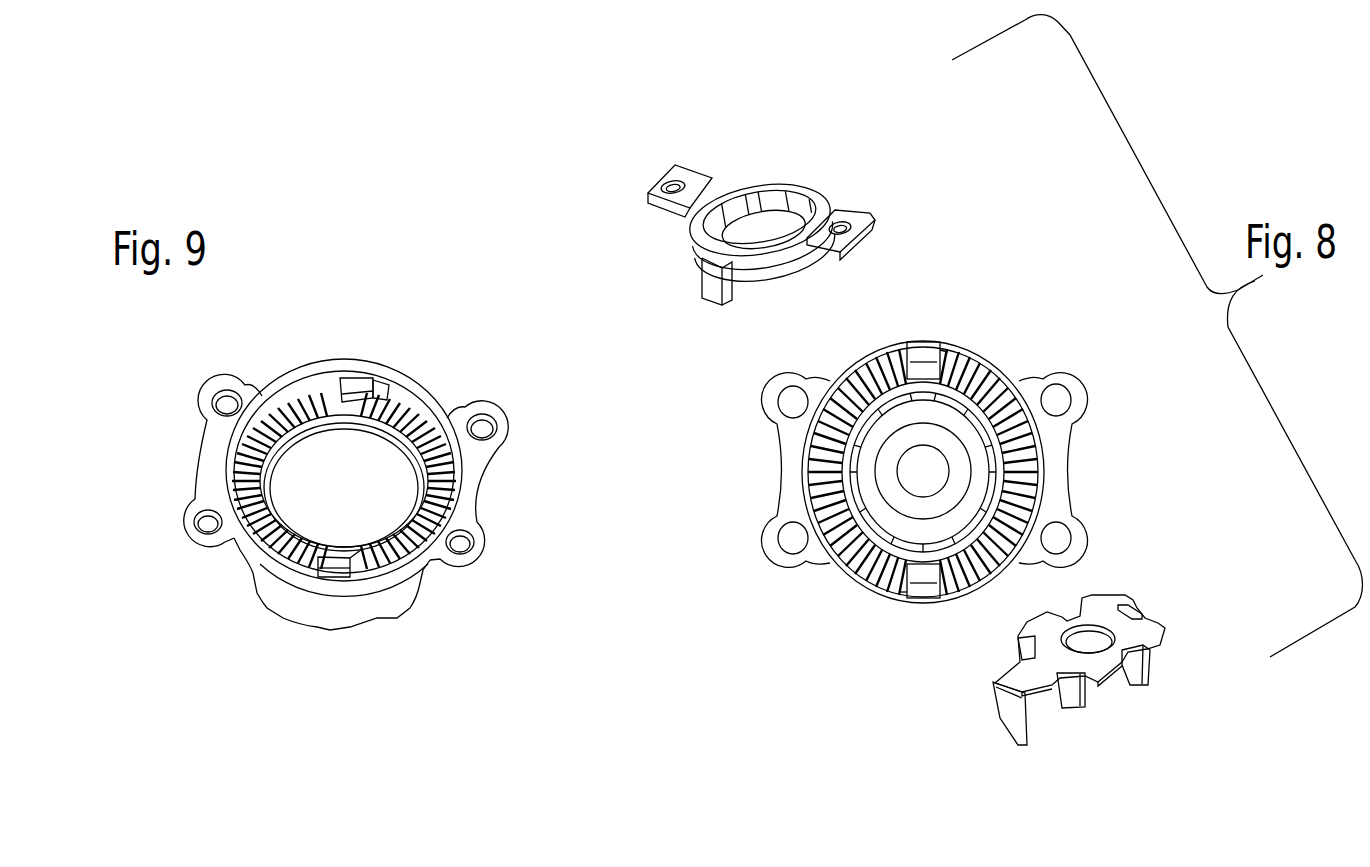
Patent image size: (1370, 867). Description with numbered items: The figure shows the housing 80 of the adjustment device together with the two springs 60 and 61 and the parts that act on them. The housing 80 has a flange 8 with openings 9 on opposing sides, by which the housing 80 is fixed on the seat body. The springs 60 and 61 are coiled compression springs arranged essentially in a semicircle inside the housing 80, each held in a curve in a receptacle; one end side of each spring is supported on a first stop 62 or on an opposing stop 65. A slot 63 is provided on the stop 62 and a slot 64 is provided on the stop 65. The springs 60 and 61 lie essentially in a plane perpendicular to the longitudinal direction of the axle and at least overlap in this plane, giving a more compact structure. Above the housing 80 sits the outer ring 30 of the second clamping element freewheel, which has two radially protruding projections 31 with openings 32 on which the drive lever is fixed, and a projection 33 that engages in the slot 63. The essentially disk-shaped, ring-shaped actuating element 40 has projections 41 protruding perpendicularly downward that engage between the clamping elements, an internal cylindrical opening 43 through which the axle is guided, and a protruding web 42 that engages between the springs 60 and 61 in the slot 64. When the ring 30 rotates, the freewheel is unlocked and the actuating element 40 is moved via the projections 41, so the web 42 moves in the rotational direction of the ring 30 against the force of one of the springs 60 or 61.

In FIG. 9, the flange 8 is at (462, 493).
In FIG. 8, the flange 8 is at (1052, 443).
In FIG. 8, the openings 9 is at (1055, 398).
In FIG. 8, the outer ring 30 is at (762, 185).
In FIG. 8, the projections 31 is at (690, 170).
In FIG. 8, the openings 32 is at (662, 183).
In FIG. 8, the projection 33 is at (715, 285).
In FIG. 8, the actuating element 40 is at (1125, 622).
In FIG. 8, the projections 41 is at (1140, 685).
In FIG. 8, the protruding web 42 is at (1012, 722).
In FIG. 8, the internal cylindrical opening 43 is at (1128, 613).
In FIG. 9, the spring 60 is at (433, 418).
In FIG. 8, the spring 60 is at (1038, 480).
In FIG. 9, the spring 61 is at (243, 465).
In FIG. 8, the spring 61 is at (805, 466).
In FIG. 9, the first stop 62 is at (328, 578).
In FIG. 8, the first stop 62 is at (917, 592).
In FIG. 9, the slot 63 is at (352, 574).
In FIG. 8, the slot 63 is at (925, 583).
In FIG. 9, the slot 64 is at (372, 398).
In FIG. 8, the slot 64 is at (927, 362).
In FIG. 9, the opposing stop 65 is at (358, 390).
In FIG. 8, the opposing stop 65 is at (922, 350).
In FIG. 9, the housing 80 is at (219, 594).
In FIG. 8, the housing 80 is at (840, 565).